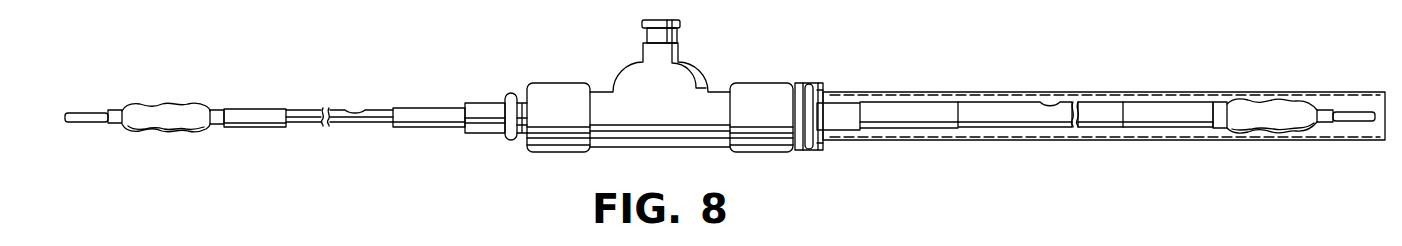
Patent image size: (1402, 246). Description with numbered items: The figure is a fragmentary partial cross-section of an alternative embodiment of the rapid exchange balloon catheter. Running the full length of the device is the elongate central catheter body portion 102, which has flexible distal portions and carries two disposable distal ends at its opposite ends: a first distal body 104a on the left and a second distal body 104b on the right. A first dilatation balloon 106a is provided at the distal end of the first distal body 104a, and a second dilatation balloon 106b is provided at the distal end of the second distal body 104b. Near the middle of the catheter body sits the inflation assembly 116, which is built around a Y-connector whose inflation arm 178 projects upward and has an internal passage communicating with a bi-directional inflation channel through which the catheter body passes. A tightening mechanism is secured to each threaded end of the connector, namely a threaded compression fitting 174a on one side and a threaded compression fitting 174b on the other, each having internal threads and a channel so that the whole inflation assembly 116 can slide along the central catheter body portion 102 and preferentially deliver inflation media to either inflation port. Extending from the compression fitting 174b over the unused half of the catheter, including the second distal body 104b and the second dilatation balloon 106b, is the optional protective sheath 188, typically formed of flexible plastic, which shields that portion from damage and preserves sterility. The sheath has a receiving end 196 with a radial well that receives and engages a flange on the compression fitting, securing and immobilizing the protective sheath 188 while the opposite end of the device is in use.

The central catheter body portion 102 is at (410, 115).
The first distal body 104a is at (264, 127).
The second distal body 104b is at (1052, 130).
The first dilatation balloon 106a is at (166, 115).
The second dilatation balloon 106b is at (1270, 135).
The inflation assembly 116 is at (607, 64).
The threaded compression fitting 174a is at (537, 95).
The threaded compression fitting 174b is at (768, 83).
The inflation arm 178 is at (682, 44).
The protective sheath 188 is at (912, 93).
The receiving end 196 is at (816, 152).